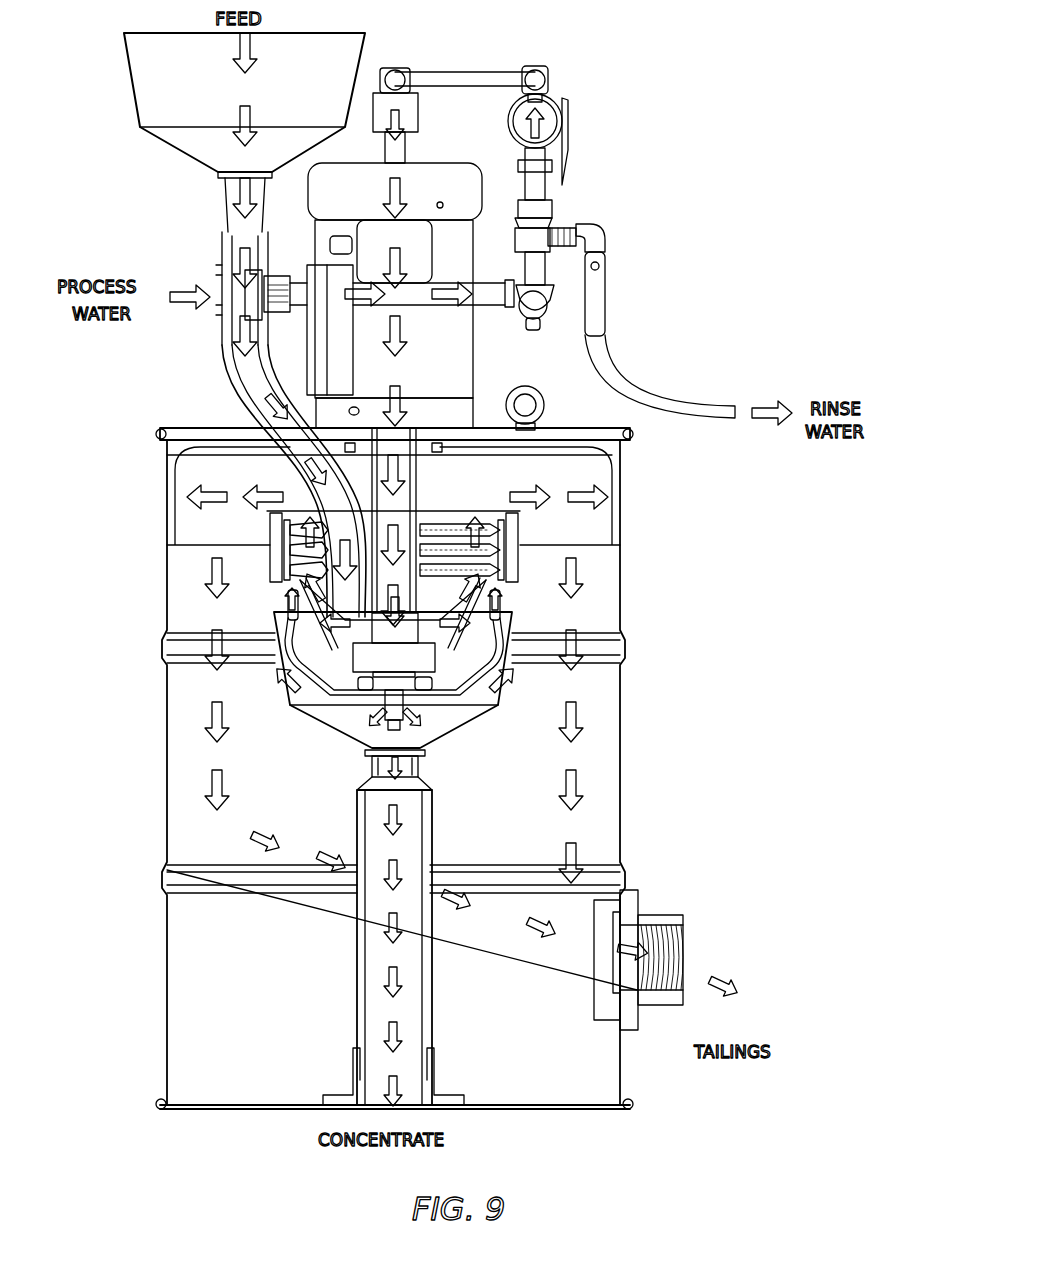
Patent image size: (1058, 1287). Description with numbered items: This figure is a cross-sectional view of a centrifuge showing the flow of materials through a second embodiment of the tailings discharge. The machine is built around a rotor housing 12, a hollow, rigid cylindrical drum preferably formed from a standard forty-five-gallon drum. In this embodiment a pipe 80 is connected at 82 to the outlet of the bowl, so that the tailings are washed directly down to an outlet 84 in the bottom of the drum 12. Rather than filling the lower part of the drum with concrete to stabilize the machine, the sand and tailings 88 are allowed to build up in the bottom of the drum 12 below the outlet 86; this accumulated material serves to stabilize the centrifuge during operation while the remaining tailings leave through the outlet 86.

The rotor housing 12 is at (167, 572).
The pipe 80 is at (352, 830).
The connection 82 is at (375, 1088).
The outlet 84 is at (420, 770).
The outlet 86 is at (665, 915).
The sand and tailings 88 is at (268, 1004).